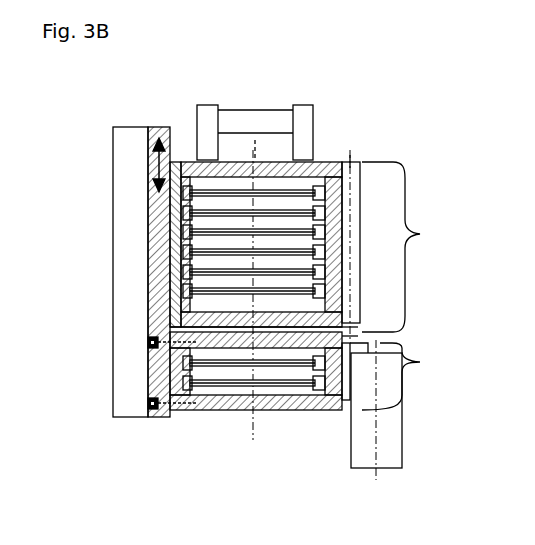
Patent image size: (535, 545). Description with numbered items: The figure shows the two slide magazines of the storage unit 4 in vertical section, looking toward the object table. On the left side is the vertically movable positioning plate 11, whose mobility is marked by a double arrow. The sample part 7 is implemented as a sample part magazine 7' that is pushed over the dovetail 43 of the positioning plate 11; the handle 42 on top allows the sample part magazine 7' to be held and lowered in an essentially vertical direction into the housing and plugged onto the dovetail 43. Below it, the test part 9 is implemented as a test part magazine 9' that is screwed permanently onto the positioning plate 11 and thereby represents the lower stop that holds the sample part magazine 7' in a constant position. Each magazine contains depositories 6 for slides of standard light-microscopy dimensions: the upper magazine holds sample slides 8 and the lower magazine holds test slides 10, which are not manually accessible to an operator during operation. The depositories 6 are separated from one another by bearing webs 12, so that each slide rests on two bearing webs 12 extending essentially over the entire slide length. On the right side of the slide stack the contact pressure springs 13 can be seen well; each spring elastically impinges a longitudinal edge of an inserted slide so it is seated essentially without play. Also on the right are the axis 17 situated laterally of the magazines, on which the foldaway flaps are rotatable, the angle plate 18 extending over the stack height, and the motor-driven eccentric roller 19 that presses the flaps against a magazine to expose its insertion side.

The storage unit 4 is at (422, 144).
The depository 6 is at (0, 185).
The sample part 7 is at (412, 247).
The sample part magazine 7' is at (98, 337).
The sample slide 8 is at (290, 207).
The test part 9 is at (412, 376).
The test part magazine 9' is at (98, 411).
The test slide 10 is at (230, 386).
The positioning plate 11 is at (148, 197).
The bearing web 12 is at (148, 205).
The contact pressure spring 13 is at (336, 168).
The axis 17 is at (351, 224).
The angle plate 18 is at (355, 276).
The eccentric roller 19 is at (393, 450).
The handle 42 is at (239, 122).
The dovetail 43 is at (177, 160).